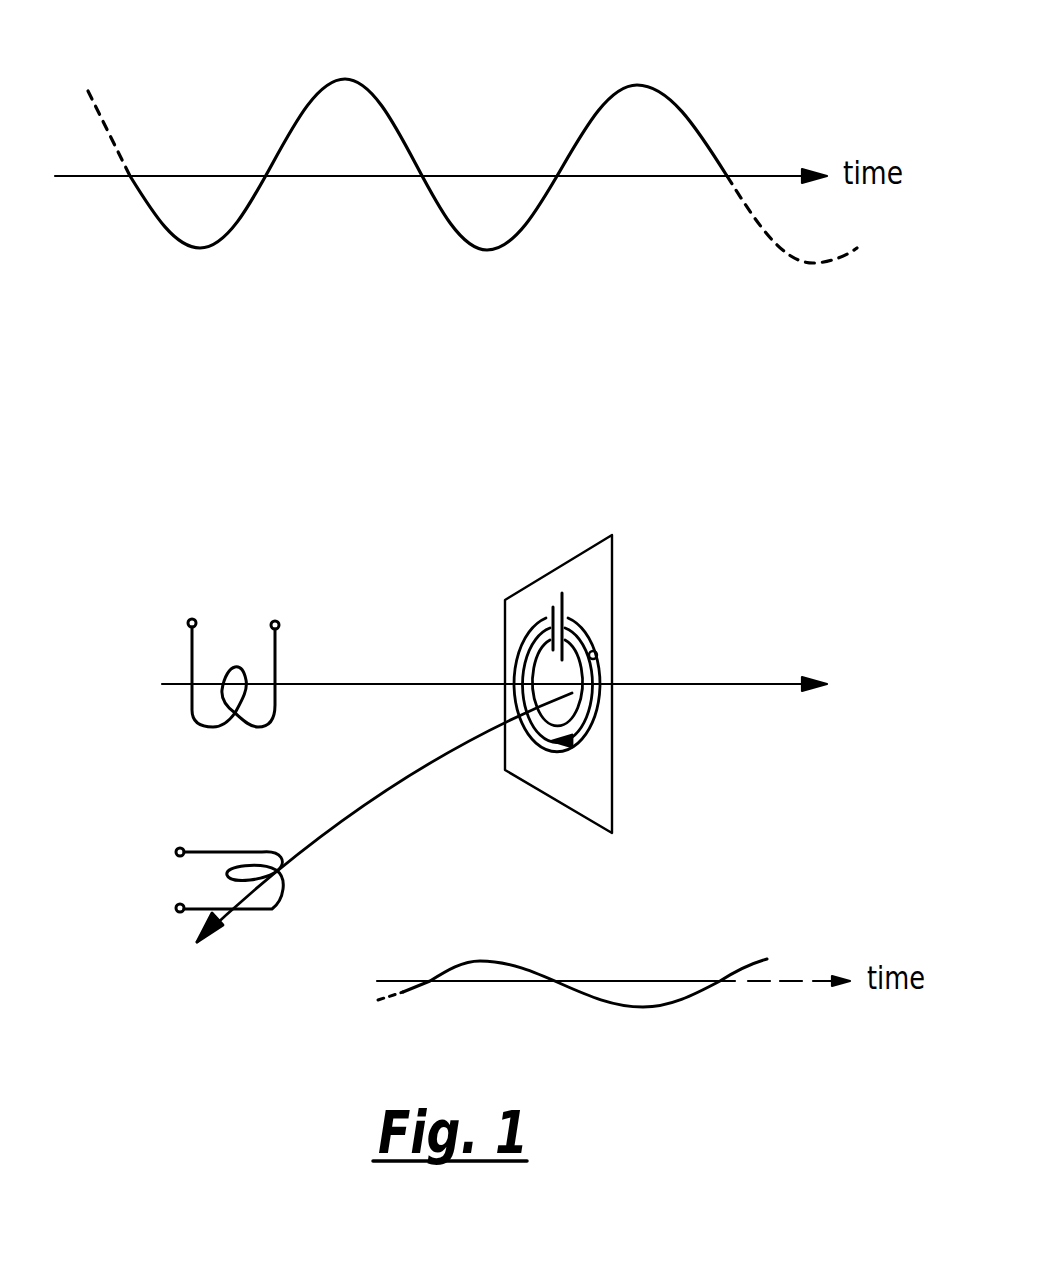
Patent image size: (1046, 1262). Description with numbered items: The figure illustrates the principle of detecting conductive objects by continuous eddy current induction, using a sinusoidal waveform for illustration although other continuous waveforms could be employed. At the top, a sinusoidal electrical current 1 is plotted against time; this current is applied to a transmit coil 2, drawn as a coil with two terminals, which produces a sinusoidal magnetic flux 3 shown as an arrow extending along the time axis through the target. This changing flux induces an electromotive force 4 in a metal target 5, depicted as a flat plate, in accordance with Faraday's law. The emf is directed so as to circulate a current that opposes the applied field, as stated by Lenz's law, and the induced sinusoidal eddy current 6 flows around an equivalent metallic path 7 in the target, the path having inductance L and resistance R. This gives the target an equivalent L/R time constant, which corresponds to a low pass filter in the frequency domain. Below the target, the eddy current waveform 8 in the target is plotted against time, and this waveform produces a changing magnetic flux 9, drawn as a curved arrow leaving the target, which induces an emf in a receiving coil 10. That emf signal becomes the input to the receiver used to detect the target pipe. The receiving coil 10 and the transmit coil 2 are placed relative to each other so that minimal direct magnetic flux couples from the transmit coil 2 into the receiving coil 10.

The sinusoidal electrical current 1 is at (295, 122).
The transmit coil 2 is at (188, 663).
The sinusoidal magnetic flux 3 is at (743, 684).
The electromotive force 4 is at (586, 601).
The metal target 5 is at (613, 802).
The induced sinusoidal eddy current 6 is at (585, 718).
The equivalent metallic path 7 is at (597, 651).
The eddy current waveform 8 is at (528, 968).
The changing magnetic flux 9 is at (370, 790).
The receiving coil 10 is at (212, 851).